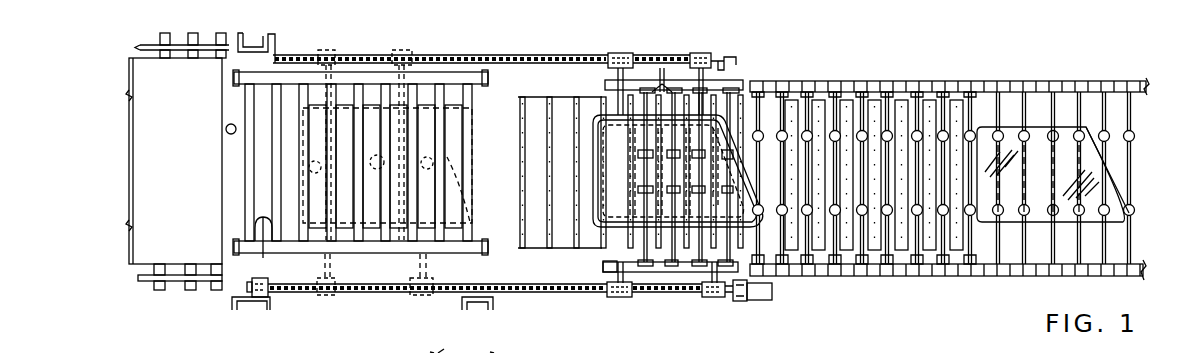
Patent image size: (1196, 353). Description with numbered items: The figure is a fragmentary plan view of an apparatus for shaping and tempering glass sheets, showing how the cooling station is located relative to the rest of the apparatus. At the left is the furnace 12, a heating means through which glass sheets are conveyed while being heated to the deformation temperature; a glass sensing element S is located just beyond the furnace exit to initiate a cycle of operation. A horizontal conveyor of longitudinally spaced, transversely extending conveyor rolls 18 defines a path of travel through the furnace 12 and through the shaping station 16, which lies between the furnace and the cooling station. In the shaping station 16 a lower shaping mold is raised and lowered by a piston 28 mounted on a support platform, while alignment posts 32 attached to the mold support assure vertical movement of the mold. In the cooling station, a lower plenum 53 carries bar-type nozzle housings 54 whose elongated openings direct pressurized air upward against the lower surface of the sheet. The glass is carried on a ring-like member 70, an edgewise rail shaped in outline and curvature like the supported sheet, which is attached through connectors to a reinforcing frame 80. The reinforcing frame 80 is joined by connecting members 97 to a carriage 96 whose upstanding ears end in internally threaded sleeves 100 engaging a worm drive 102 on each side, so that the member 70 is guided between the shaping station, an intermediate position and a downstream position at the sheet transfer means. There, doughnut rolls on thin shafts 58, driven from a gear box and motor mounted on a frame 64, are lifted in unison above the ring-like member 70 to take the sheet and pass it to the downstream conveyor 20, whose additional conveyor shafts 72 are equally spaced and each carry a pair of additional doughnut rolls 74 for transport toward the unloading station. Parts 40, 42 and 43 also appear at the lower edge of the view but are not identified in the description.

The furnace 12 is at (178, 281).
The glass sensing element S is at (229, 123).
The shaping station 16 is at (383, 257).
The alignment posts 32 is at (298, 160).
The piston 28 is at (377, 155).
The conveyor rolls 18 is at (252, 263).
The worm drive 102 is at (556, 54).
The lower plenum 53 is at (596, 95).
The thin shafts 58 is at (662, 84).
The internally threaded sleeves 100 is at (711, 58).
The bar-type nozzle housings 54 is at (537, 110).
The reinforcing frame 80 is at (597, 115).
The ring-like member 70 is at (613, 152).
The connecting members 97 is at (614, 278).
The frame 64 is at (681, 272).
The carriage 96 is at (719, 302).
The downstream conveyor 20 is at (863, 76).
The additional conveyor shafts 72 is at (1003, 107).
The additional doughnut rolls 74 is at (1040, 125).
The conveyor component 43 is at (418, 344).
The conveyor component 42 is at (455, 344).
The conveyor component 40 is at (503, 344).